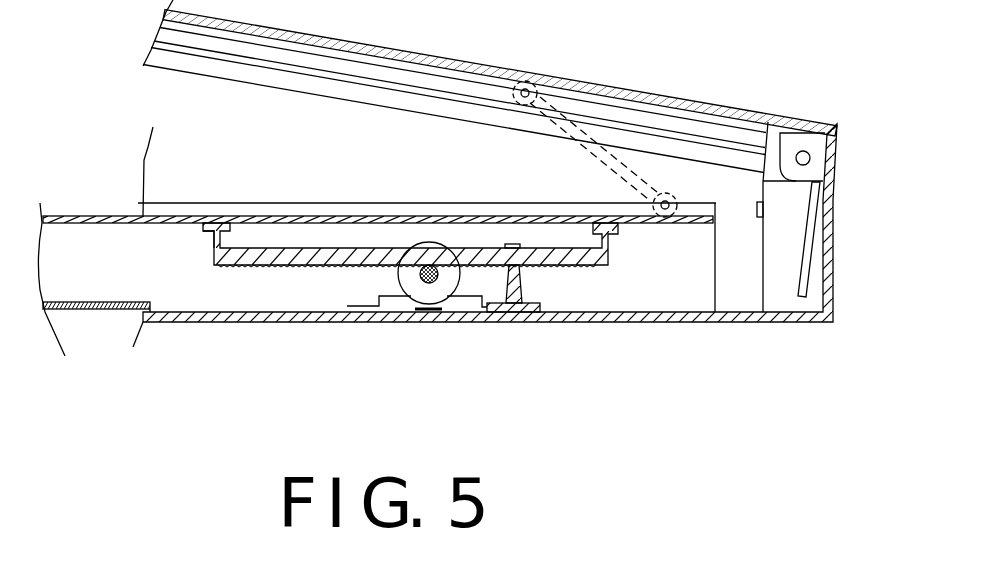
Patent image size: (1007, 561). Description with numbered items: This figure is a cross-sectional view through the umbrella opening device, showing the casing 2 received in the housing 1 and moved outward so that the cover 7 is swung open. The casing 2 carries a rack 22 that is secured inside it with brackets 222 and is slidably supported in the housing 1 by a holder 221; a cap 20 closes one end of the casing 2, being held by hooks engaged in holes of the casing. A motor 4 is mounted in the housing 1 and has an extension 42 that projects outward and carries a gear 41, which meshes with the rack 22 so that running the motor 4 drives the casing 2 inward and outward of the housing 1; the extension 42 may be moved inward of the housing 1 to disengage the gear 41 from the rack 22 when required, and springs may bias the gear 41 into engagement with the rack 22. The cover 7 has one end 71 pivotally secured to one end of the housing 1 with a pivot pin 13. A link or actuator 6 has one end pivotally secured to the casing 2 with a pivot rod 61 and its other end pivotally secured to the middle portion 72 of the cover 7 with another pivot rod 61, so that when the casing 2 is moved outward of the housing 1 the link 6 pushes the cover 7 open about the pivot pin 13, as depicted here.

The housing 1 is at (691, 313).
The casing 2 is at (375, 254).
The cap 20 is at (185, 288).
The rack 22 is at (568, 257).
The holder 221 is at (512, 302).
The brackets 222 is at (221, 222).
The motor 4 is at (412, 281).
The gear 41 is at (425, 280).
The extension 42 is at (432, 312).
The link or actuator 6 is at (628, 160).
The pivot rod 61 is at (658, 187).
The cover 7 is at (661, 94).
The end of cover 71 is at (790, 150).
The middle portion of cover 72 is at (538, 82).
The pivot pin 13 is at (810, 155).